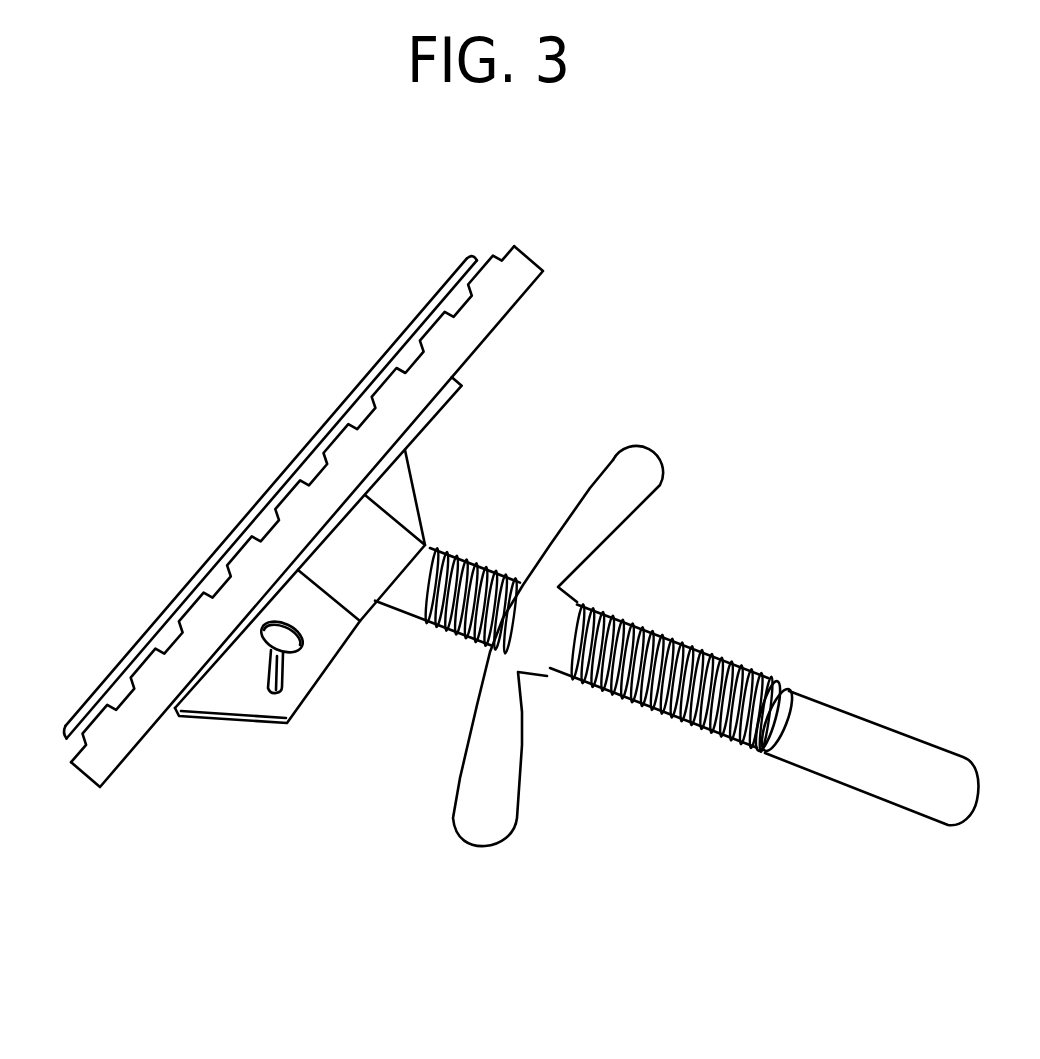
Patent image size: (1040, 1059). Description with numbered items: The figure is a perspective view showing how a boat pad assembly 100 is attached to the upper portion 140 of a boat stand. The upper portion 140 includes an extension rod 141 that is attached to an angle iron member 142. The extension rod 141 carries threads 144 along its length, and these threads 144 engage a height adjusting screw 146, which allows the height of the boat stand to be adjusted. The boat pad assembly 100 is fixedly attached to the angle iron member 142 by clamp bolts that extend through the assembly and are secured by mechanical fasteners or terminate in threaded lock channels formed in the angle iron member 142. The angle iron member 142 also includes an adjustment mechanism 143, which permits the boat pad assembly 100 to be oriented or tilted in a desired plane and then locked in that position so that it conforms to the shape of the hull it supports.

The boat pad assembly 100 is at (538, 234).
The upper portion 140 is at (576, 635).
The extension rod 141 is at (813, 769).
The angle iron member 142 is at (412, 520).
The adjustment mechanism 143 is at (286, 674).
The threads 144 is at (723, 658).
The height adjusting screw 146 is at (652, 458).